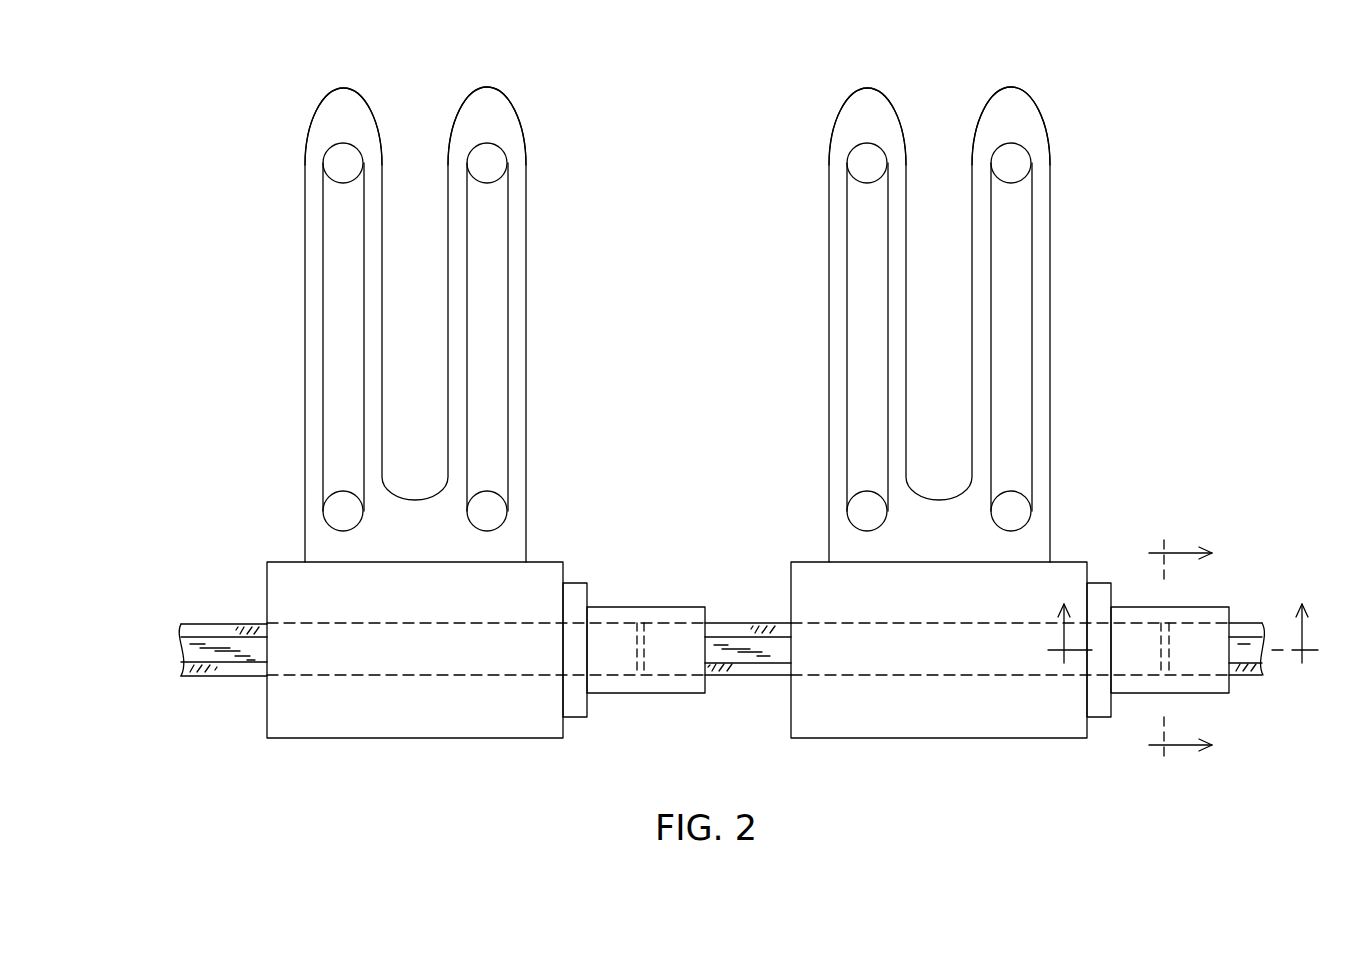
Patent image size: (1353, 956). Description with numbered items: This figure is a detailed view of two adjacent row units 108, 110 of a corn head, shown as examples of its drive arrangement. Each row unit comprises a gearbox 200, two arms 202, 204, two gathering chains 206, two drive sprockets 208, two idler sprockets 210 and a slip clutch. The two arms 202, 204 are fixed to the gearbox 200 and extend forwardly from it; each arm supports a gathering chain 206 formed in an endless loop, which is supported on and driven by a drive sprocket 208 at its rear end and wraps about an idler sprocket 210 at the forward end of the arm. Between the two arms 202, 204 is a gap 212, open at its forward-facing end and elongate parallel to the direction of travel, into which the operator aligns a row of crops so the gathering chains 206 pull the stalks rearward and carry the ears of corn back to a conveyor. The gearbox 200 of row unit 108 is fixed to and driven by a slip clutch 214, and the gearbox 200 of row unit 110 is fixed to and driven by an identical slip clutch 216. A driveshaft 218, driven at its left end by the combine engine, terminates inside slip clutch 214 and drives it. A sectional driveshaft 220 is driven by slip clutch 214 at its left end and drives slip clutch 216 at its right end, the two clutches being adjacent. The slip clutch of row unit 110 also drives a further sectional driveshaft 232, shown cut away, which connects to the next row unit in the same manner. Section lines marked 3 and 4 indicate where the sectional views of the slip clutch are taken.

The row unit 108 is at (418, 748).
The row unit 110 is at (943, 750).
The gearbox 200 is at (302, 718).
The arm 202 is at (304, 184).
The arm 204 is at (527, 184).
The gathering chain 206 is at (305, 330).
The drive sprocket 208 is at (323, 520).
The idler sprocket 210 is at (323, 153).
The gap 212 is at (416, 177).
The slip clutch 214 is at (630, 700).
The slip clutch 216 is at (1153, 700).
The driveshaft 218 is at (232, 670).
The driveshaft 220 is at (740, 623).
The sectional driveshaft 232 is at (1250, 623).
The section line 3- 3 is at (1183, 633).
The section line 4- 4 is at (1180, 650).